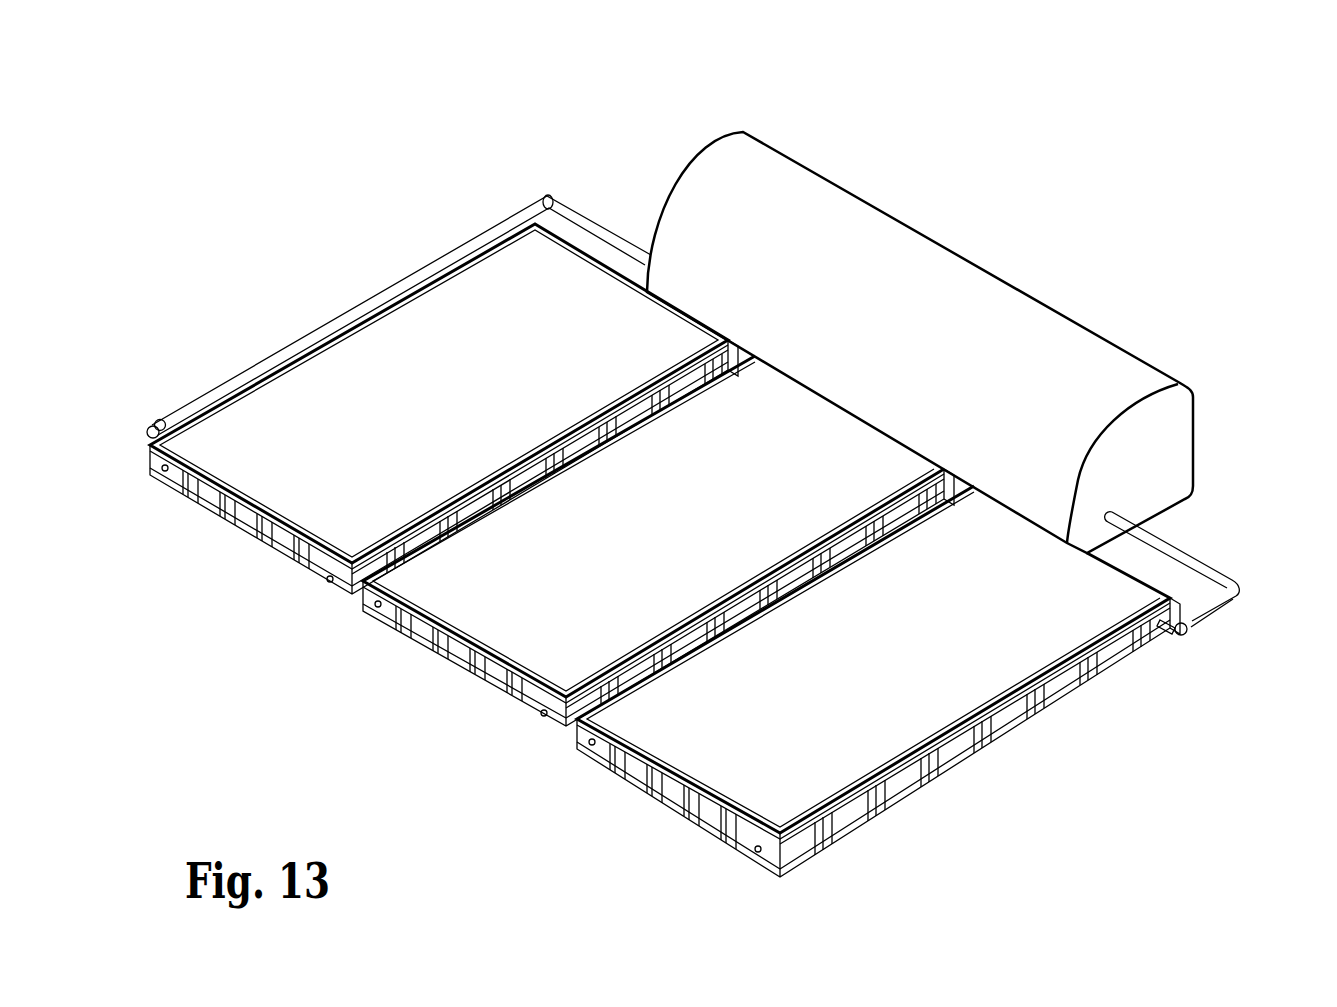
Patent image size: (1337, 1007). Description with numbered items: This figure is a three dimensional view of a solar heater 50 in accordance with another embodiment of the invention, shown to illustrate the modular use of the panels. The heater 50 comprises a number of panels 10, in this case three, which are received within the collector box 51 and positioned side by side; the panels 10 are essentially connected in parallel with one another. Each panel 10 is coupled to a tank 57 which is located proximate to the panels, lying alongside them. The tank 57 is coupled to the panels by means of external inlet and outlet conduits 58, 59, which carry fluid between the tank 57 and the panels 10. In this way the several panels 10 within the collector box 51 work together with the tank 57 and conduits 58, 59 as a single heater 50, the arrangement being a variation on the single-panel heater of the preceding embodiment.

The panel 10 is at (801, 689).
The heater 50 is at (650, 172).
The collector box 51 is at (247, 520).
The tank 57 is at (955, 300).
The inlet conduit 58 is at (1188, 557).
The outlet conduit 59 is at (227, 383).